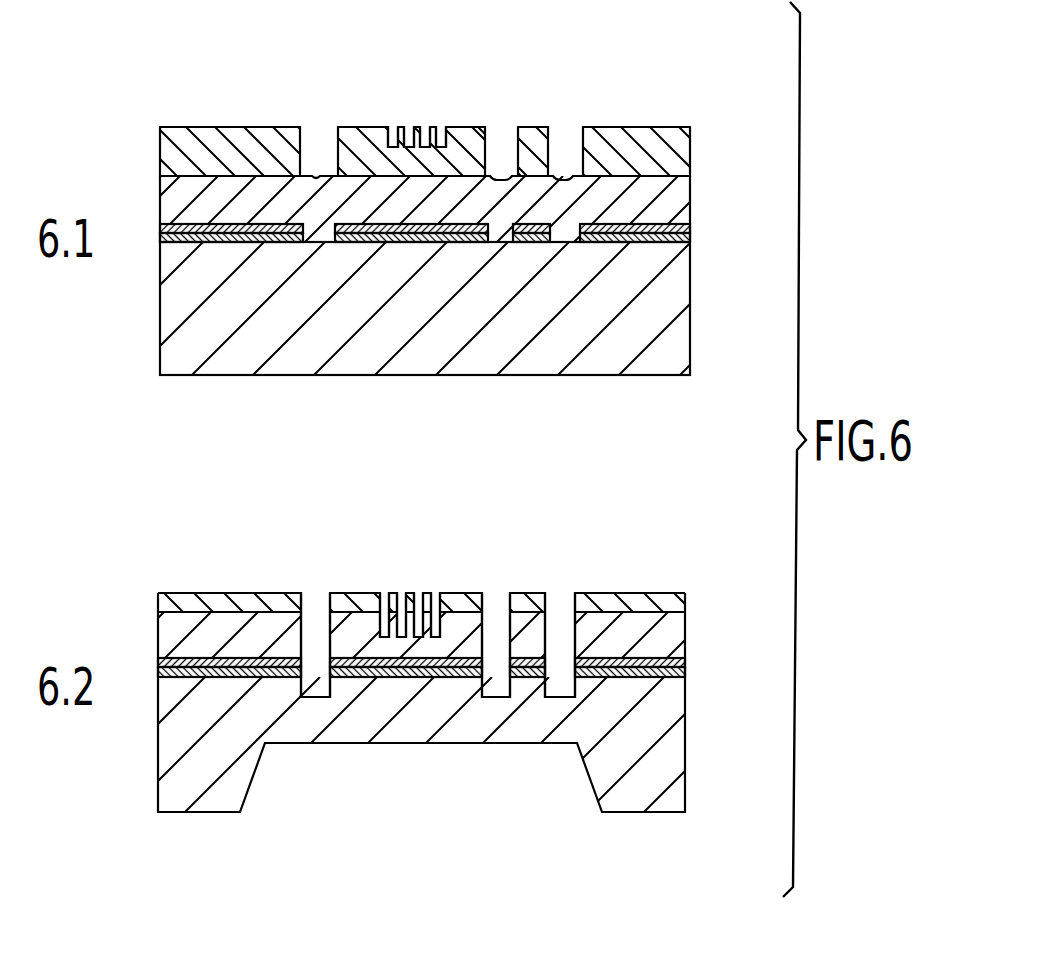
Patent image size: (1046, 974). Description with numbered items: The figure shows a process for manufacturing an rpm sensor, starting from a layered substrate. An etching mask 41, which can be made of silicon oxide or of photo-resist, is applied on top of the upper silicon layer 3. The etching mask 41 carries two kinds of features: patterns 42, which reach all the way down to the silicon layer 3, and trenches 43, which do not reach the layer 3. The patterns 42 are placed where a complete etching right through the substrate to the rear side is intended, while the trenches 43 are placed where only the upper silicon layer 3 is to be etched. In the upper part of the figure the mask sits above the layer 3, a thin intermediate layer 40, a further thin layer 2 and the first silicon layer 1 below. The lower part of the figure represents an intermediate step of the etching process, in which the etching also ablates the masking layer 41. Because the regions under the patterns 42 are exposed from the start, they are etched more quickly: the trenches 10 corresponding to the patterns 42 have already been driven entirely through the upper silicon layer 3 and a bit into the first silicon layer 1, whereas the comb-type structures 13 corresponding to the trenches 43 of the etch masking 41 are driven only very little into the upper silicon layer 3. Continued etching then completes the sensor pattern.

The first silicon layer 1 is at (441, 527).
The insulating layer 2 is at (445, 470).
The upper silicon layer 3 is at (423, 418).
The trenches 10 is at (438, 600).
The comb-type structures 13 is at (426, 554).
The conductive layer 40 is at (452, 434).
The etching mask 41 is at (428, 369).
The patterns 42 is at (455, 108).
The trenches 43 is at (425, 94).